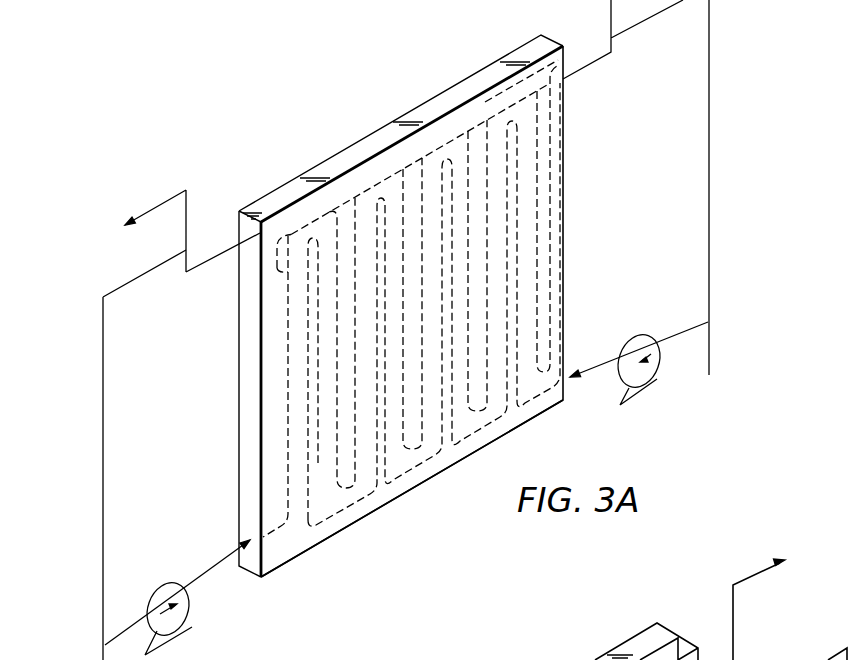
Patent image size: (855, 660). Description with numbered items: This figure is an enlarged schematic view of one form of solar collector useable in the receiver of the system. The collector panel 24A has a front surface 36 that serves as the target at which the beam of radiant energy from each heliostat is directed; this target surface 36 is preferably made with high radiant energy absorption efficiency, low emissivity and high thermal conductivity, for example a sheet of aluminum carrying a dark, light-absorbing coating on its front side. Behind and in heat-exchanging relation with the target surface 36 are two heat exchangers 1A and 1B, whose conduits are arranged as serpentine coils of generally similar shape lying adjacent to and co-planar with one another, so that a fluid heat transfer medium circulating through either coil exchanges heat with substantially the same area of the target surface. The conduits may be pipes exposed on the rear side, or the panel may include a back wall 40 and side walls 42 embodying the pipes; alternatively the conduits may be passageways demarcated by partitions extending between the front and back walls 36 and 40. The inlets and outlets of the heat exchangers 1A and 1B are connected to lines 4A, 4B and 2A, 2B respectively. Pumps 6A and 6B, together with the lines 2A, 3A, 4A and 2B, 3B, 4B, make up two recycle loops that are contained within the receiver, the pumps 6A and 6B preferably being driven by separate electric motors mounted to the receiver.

The heat exchanger 1A is at (285, 218).
The heat exchanger 1B is at (517, 222).
The line 2A is at (200, 276).
The line 2B is at (597, 60).
The line 3A is at (103, 352).
The line 3B is at (712, 192).
The line 4A is at (210, 553).
The line 4B is at (602, 356).
The pump 6A is at (152, 601).
The pump 6B is at (652, 336).
The collector panel 24A is at (237, 347).
The front surface 36 is at (272, 387).
The back wall 40 is at (238, 430).
The side walls 42 is at (248, 462).